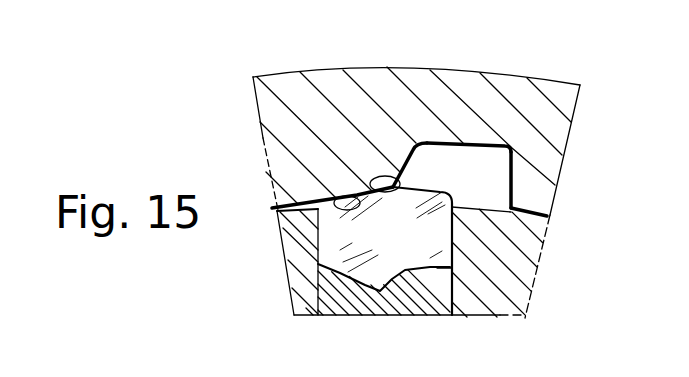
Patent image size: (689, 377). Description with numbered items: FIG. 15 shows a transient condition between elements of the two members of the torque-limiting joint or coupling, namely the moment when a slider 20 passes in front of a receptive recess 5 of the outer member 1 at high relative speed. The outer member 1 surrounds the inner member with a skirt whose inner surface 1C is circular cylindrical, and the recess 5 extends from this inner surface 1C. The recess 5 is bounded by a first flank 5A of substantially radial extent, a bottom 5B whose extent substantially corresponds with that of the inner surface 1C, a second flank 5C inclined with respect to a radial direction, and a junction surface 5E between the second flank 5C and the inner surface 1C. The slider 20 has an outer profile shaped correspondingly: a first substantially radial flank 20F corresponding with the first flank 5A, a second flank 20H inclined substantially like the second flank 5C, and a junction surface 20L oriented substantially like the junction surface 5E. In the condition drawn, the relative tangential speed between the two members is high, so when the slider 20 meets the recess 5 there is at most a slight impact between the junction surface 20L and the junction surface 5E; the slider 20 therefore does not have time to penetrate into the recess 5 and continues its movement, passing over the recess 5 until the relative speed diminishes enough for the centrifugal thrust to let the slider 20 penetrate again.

The outer member 1 is at (410, 65).
The inner surface 1C is at (540, 218).
The receptive recess 5 is at (414, 121).
The first flank 5A is at (560, 170).
The bottom 5B is at (480, 148).
The second flank 5C is at (407, 160).
The junction surface 5E is at (287, 205).
The slider 20 is at (420, 269).
The first flank 20F is at (448, 249).
The second flank 20H is at (323, 235).
The junction surface 20L is at (396, 192).